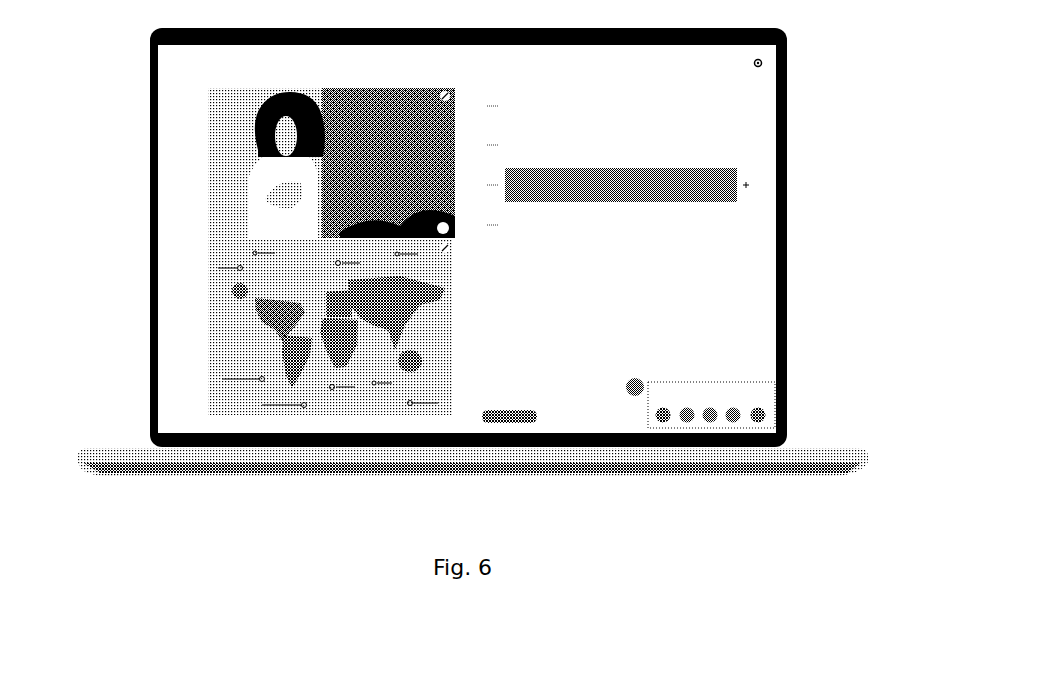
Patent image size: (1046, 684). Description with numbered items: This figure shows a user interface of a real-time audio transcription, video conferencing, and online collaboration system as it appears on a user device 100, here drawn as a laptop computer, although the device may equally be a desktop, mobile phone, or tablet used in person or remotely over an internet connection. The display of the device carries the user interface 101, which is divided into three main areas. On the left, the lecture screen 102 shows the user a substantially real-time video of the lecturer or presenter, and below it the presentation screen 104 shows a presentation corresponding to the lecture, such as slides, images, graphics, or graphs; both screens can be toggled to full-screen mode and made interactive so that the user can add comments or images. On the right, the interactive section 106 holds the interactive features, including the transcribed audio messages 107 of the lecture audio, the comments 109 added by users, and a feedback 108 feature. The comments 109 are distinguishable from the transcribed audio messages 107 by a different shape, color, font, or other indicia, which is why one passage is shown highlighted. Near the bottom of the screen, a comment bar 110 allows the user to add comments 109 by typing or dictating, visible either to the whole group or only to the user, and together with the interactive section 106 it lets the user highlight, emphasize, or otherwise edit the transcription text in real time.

The user device 100 is at (160, 485).
The user interface 101 is at (720, 328).
The lecture screen 102 is at (222, 212).
The presentation screen 104 is at (208, 350).
The interactive section 106 is at (695, 157).
The transcribed audio messages 107 is at (740, 113).
The feedback 108 is at (767, 407).
The comments 109 is at (740, 172).
The comment bar 110 is at (537, 417).